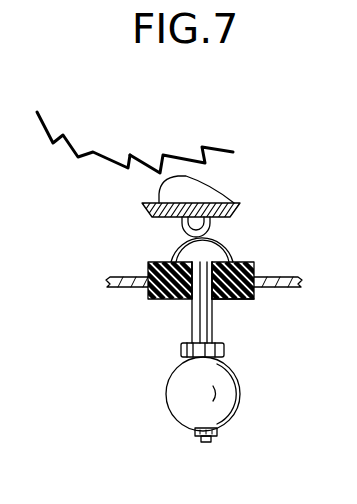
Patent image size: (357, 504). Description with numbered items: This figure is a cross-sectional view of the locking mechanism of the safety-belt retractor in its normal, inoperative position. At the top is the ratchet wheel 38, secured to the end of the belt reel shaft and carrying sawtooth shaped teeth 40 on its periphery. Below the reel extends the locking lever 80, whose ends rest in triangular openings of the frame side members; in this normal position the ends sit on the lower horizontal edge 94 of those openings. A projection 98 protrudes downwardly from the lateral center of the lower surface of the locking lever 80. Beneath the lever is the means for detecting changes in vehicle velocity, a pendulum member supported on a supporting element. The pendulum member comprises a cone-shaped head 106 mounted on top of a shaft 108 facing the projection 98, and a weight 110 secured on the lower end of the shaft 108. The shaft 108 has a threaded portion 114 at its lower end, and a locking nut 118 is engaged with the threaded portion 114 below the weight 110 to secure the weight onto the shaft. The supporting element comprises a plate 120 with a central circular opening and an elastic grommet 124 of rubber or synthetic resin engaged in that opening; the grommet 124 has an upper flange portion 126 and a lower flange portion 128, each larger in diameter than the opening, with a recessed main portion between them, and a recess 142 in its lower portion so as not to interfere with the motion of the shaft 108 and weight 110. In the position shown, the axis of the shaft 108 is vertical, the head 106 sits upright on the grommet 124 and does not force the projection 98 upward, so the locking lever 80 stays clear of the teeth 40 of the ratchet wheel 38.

The ratchet wheel 38 is at (88, 134).
The sawtooth shaped teeth 40 is at (155, 162).
The locking lever 80 is at (222, 222).
The horizontal edge 94 is at (205, 188).
The projection 98 is at (184, 223).
The cone-shaped head 106 is at (208, 249).
The shaft 108 is at (200, 333).
The weight 110 is at (230, 395).
The threaded portion 114 is at (200, 436).
The locking nut 118 is at (217, 431).
The plate 120 is at (123, 288).
The grommet 124 is at (160, 306).
The upper flange portion 126 is at (257, 260).
The lower flange portion 128 is at (255, 296).
The recess 142 is at (223, 292).